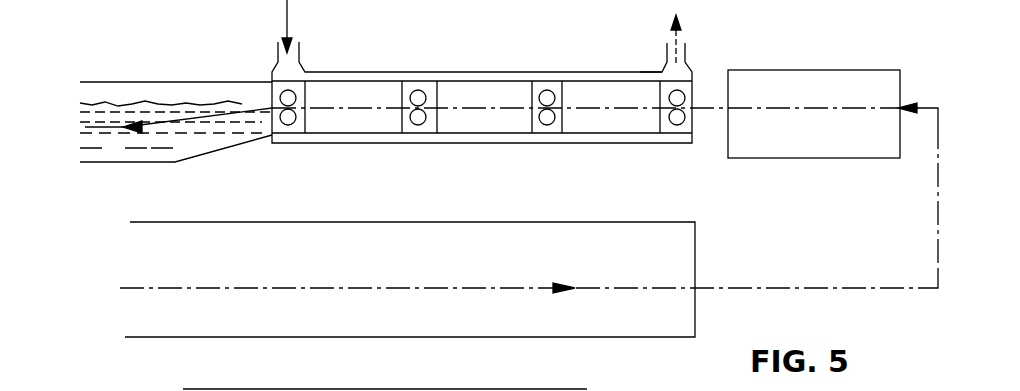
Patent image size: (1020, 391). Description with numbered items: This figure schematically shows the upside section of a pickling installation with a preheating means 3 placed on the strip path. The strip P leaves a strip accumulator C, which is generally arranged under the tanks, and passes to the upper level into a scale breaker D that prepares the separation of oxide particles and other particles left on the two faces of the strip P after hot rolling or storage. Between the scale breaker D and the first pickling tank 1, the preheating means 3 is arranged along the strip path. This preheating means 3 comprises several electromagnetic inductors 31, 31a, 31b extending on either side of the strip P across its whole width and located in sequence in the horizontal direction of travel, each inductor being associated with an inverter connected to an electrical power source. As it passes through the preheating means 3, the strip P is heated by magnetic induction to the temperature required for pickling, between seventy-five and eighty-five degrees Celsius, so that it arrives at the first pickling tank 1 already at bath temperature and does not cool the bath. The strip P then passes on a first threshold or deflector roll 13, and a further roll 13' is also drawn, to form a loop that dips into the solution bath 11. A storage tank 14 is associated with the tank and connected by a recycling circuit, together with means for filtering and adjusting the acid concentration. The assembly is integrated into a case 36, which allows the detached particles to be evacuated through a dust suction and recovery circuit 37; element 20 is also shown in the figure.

The first pickling tank 1 is at (120, 82).
The strand 20 is at (233, 103).
The storage tank 14 is at (190, 141).
The first threshold or deflector roll 13 is at (317, 125).
The electromagnetic inductor 31b is at (343, 97).
The preheating means 3 is at (383, 72).
The electromagnetic inductor 31a is at (488, 91).
The roller pair 13' is at (548, 69).
The electromagnetic inductor 31 is at (583, 92).
The case 36 is at (613, 72).
The dust suction and recovery circuit 37 is at (683, 37).
The strip P is at (713, 108).
The scale breaker D is at (848, 70).
The solution bath 11 is at (212, 222).
The strip accumulator C is at (287, 288).